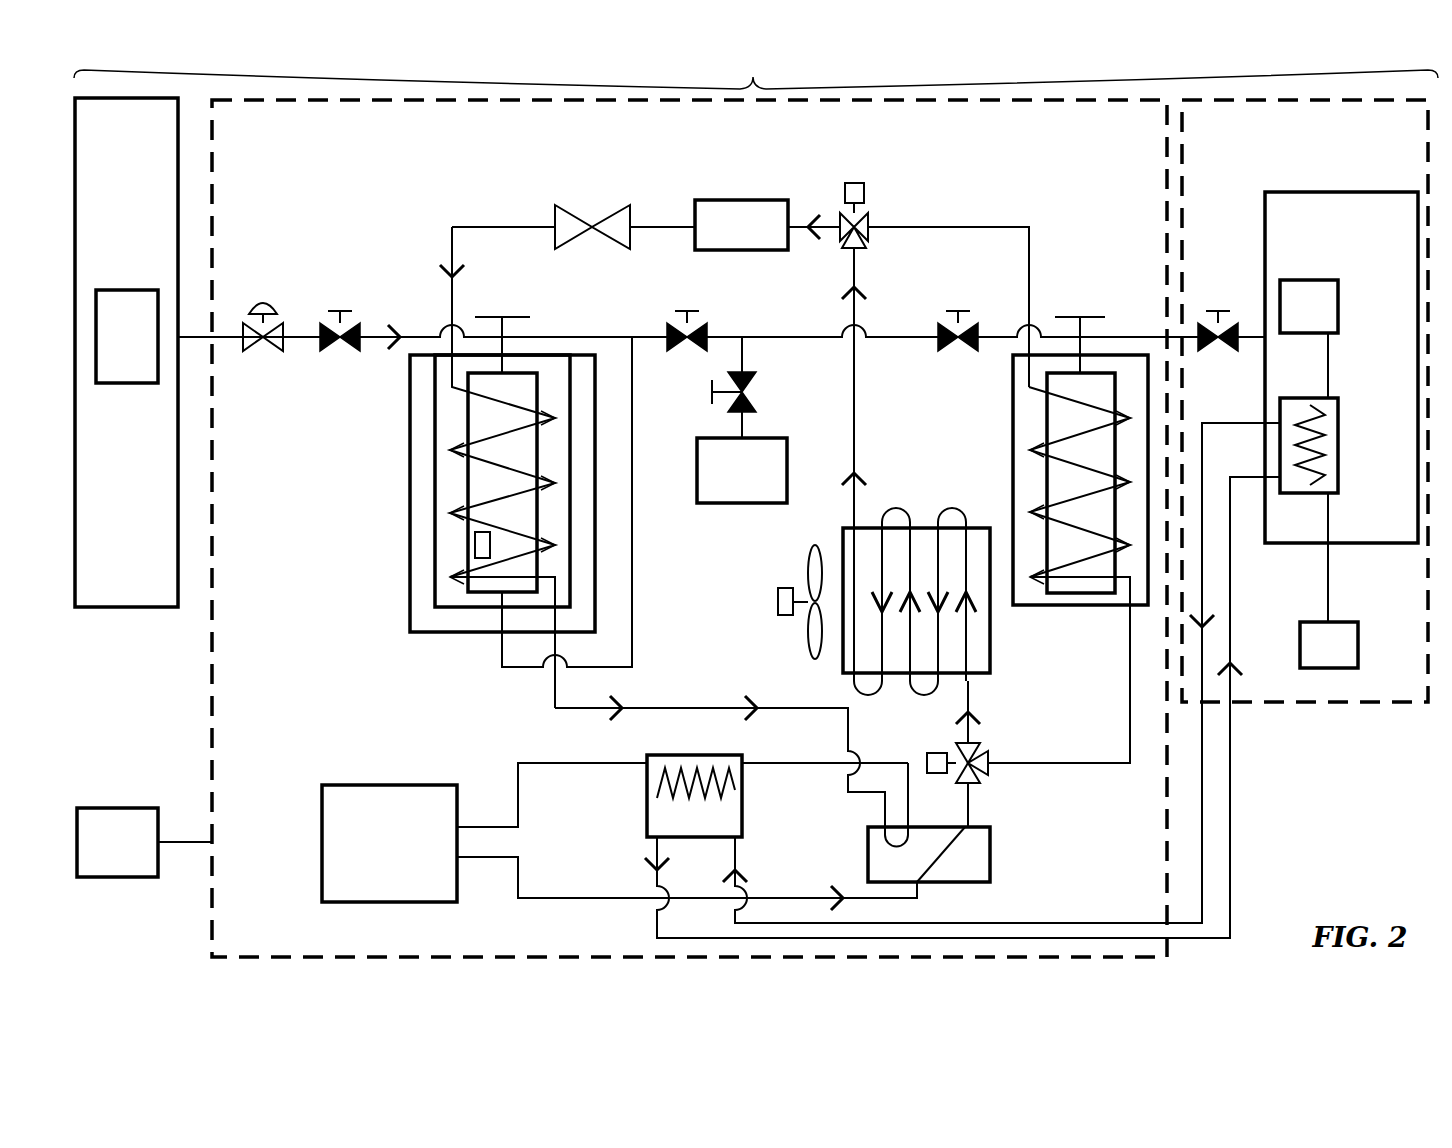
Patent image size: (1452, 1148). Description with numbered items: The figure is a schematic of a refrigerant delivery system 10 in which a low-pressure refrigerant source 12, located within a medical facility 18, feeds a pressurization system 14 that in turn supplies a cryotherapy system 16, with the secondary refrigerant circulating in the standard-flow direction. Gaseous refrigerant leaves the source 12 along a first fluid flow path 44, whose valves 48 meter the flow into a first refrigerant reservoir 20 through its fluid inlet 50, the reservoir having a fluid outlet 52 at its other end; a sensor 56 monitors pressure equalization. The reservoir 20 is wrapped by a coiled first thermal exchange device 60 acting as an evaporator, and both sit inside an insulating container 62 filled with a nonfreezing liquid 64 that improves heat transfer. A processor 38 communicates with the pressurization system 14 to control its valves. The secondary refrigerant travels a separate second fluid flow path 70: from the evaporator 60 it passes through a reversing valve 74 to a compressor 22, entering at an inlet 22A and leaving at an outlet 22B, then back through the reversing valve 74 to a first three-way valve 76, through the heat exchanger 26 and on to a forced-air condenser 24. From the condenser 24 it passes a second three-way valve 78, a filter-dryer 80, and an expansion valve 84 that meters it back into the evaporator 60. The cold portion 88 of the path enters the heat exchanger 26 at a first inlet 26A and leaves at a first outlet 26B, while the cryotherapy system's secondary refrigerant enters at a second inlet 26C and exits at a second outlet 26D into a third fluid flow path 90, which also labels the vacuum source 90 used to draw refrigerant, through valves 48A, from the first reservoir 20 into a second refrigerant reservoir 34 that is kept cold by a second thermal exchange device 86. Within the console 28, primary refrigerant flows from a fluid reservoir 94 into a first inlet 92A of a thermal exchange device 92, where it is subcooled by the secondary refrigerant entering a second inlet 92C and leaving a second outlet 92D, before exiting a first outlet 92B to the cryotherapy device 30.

The refrigerant delivery system 10 is at (756, 64).
The low-pressure refrigerant source 12 is at (127, 336).
The pressurization system 14 is at (689, 528).
The cryotherapy system 16 is at (1305, 401).
The medical facility 18 is at (126, 352).
The first refrigerant reservoir 20 is at (468, 478).
The compressor 22 is at (389, 843).
The inlet of the compressor 22A is at (457, 827).
The outlet of the compressor 22B is at (457, 857).
The condenser 24 is at (990, 660).
The heat exchanger 26 is at (697, 755).
The first inlet of the heat exchanger 26A is at (742, 770).
The first outlet of the heat exchanger 26B is at (647, 770).
The second inlet of the heat exchanger 26C is at (742, 845).
The second outlet of the heat exchanger 26D is at (653, 838).
The console 28 is at (1341, 367).
The cryotherapy device 30 is at (1329, 645).
The second refrigerant reservoir 34 is at (1047, 462).
The processor 38 is at (144, 842).
The first fluid flow path 44 is at (735, 337).
The valve 48 is at (265, 312).
The valve 48A is at (683, 312).
The fluid inlet 50 is at (502, 373).
The fluid outlet 52 is at (502, 592).
The sensor 56 is at (475, 545).
The first thermal exchange device 60 is at (468, 474).
The insulating container 62 is at (410, 400).
The nonfreezing liquid 64 is at (435, 432).
The second fluid flow path 70 is at (655, 708).
The reversing valve 74 is at (992, 862).
The first three-way valve 76 is at (985, 780).
The second three-way valve 78 is at (858, 222).
The filter-dryer 80 is at (741, 225).
The expansion valve 84 is at (588, 228).
The second thermal exchange device 86 is at (1087, 407).
The portion of the second fluid flow path 88 is at (893, 768).
The vacuum source 90 is at (1108, 923).
The thermal exchange device 92 is at (1338, 458).
The first inlet of the thermal exchange device 92A is at (1330, 398).
The first outlet of the thermal exchange device 92B is at (1330, 493).
The second inlet of the thermal exchange device 92C is at (1265, 423).
The second outlet of the thermal exchange device 92D is at (1262, 477).
The fluid reservoir 94 is at (1309, 306).